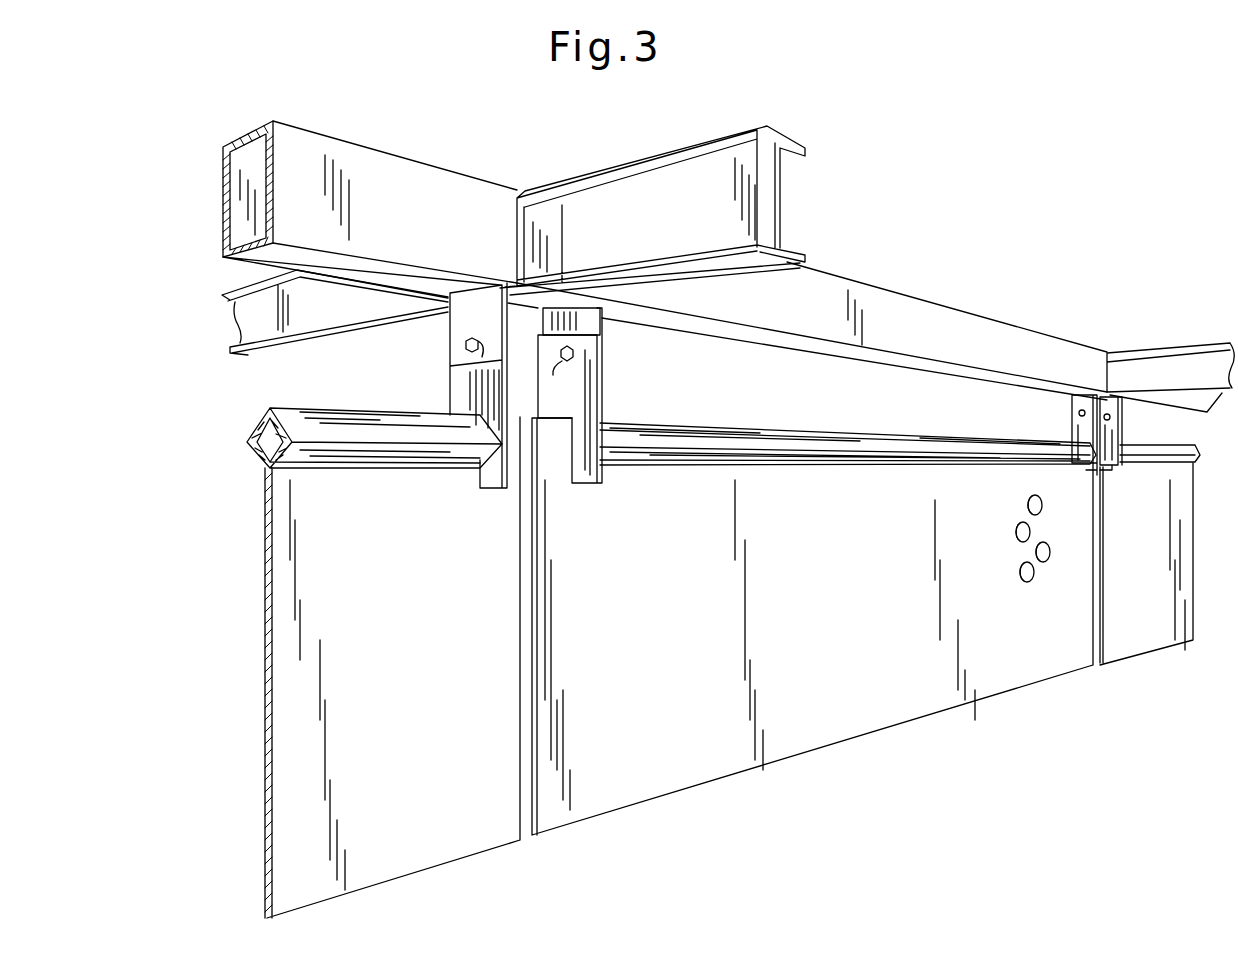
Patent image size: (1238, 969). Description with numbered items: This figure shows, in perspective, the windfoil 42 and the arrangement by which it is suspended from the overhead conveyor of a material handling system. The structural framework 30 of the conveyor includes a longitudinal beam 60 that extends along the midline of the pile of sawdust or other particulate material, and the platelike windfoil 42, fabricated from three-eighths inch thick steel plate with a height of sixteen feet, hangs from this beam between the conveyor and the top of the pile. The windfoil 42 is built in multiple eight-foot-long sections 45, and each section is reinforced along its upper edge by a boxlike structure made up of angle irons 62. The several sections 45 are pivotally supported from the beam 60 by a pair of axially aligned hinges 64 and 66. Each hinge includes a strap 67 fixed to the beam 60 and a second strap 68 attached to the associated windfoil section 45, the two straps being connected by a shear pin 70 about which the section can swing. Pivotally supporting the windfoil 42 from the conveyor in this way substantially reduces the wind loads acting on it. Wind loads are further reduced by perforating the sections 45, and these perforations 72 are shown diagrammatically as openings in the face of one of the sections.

The structural framework 30 is at (553, 162).
The windfoil 42 is at (663, 647).
The sections 45 is at (436, 598).
The longitudinal beam 60 is at (221, 229).
The angle irons 62 is at (257, 423).
The hinge 64 is at (616, 417).
The hinge 66 is at (1069, 424).
The strap 67 is at (605, 321).
The second strap 68 is at (600, 484).
The shear pin 70 is at (560, 364).
The perforations 72 is at (1015, 532).